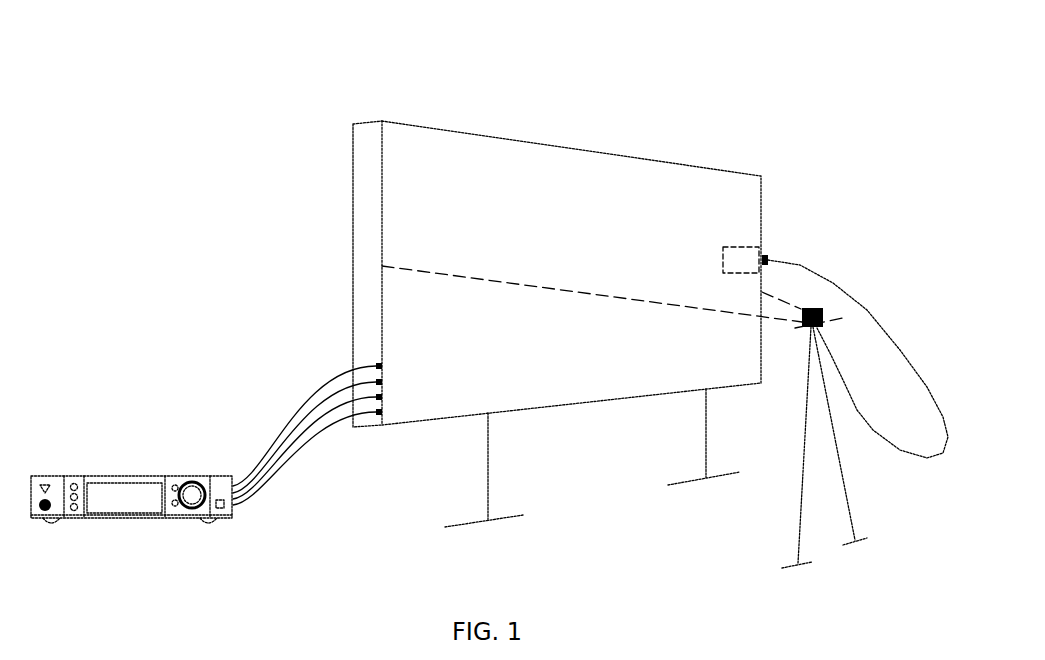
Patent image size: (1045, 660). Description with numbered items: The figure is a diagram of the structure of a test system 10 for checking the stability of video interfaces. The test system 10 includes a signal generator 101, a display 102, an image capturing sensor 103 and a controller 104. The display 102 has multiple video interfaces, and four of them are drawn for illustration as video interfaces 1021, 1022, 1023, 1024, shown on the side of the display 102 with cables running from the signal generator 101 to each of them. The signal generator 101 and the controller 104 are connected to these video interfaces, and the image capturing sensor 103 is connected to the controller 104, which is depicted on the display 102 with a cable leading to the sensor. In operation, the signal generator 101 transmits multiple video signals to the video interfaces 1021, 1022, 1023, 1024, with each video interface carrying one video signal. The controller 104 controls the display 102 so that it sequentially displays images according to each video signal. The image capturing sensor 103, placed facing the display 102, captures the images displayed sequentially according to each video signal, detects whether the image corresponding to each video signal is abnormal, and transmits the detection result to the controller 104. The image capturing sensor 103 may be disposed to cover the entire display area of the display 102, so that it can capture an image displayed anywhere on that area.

The test system 10 is at (608, 84).
The signal generator 101 is at (120, 476).
The display 102 is at (617, 153).
The video interface 1021 is at (383, 366).
The video interface 1022 is at (383, 382).
The video interface 1023 is at (383, 397).
The video interface 1024 is at (383, 412).
The image capturing sensor 103 is at (810, 309).
The controller 104 is at (747, 247).